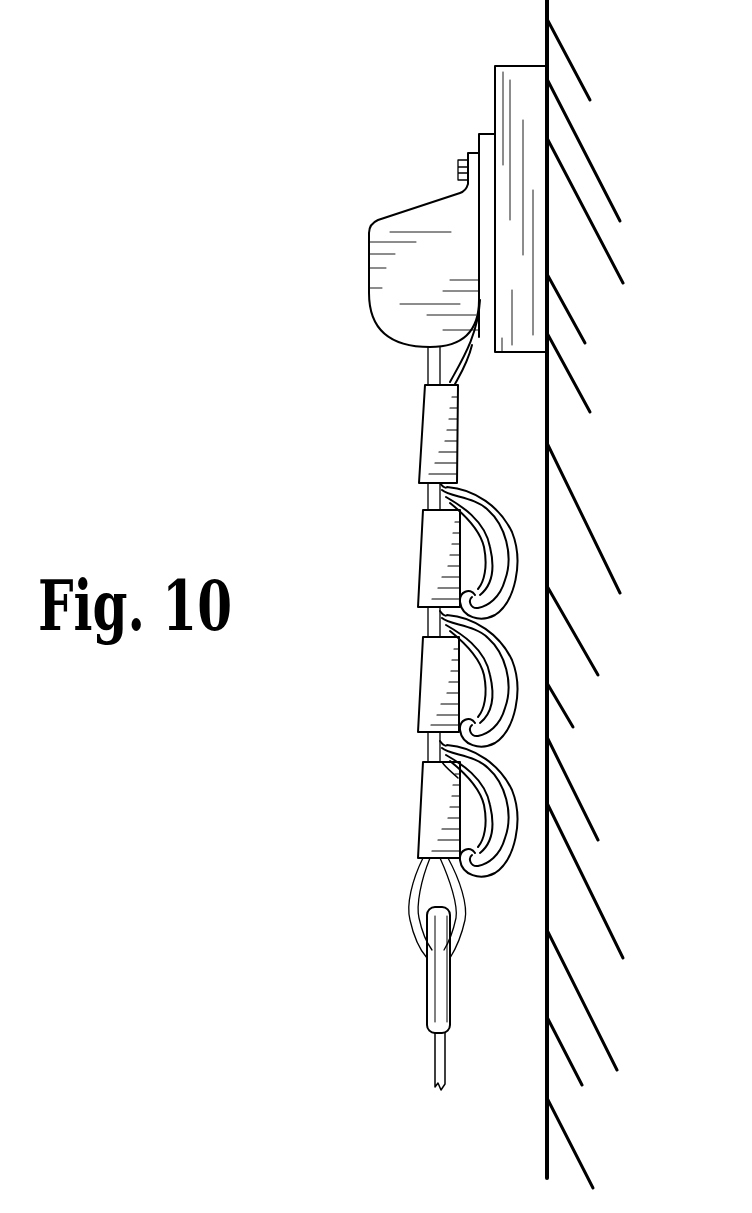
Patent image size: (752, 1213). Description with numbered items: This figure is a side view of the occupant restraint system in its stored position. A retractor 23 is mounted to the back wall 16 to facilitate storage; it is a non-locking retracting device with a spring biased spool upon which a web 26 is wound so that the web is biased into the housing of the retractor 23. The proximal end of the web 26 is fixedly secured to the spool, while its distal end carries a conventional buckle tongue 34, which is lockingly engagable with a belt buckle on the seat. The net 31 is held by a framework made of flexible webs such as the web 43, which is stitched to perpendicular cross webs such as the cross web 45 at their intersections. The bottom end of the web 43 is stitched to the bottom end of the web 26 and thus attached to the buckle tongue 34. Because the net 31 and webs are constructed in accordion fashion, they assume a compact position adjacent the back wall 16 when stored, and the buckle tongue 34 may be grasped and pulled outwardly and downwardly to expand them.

The back wall 16 is at (558, 45).
The retractor 23 is at (387, 232).
The web 26 is at (432, 373).
The net 31 is at (473, 790).
The buckle tongue 34 is at (437, 990).
The web 43 is at (458, 377).
The cross web 45 is at (428, 556).